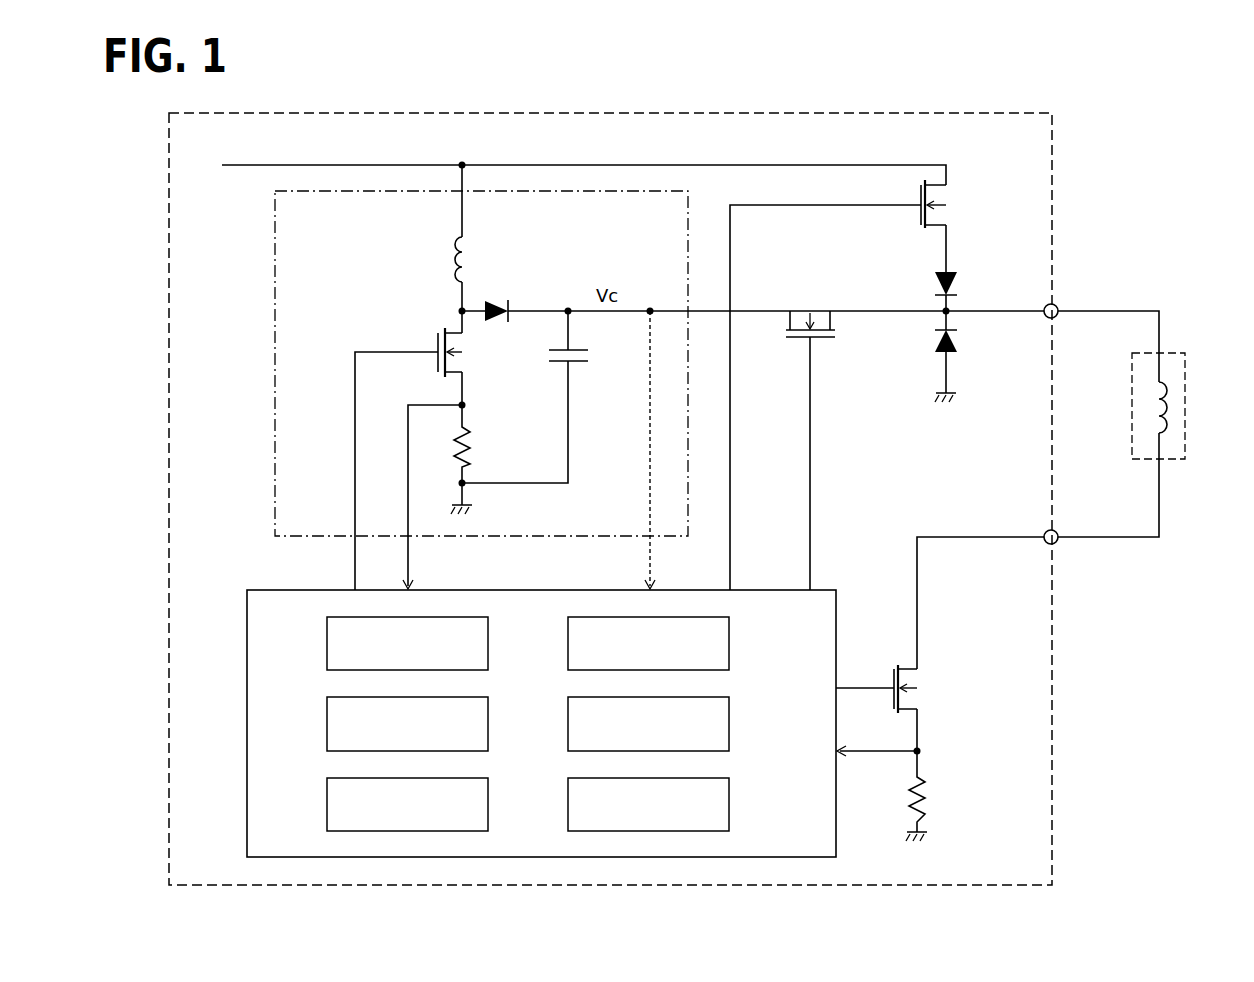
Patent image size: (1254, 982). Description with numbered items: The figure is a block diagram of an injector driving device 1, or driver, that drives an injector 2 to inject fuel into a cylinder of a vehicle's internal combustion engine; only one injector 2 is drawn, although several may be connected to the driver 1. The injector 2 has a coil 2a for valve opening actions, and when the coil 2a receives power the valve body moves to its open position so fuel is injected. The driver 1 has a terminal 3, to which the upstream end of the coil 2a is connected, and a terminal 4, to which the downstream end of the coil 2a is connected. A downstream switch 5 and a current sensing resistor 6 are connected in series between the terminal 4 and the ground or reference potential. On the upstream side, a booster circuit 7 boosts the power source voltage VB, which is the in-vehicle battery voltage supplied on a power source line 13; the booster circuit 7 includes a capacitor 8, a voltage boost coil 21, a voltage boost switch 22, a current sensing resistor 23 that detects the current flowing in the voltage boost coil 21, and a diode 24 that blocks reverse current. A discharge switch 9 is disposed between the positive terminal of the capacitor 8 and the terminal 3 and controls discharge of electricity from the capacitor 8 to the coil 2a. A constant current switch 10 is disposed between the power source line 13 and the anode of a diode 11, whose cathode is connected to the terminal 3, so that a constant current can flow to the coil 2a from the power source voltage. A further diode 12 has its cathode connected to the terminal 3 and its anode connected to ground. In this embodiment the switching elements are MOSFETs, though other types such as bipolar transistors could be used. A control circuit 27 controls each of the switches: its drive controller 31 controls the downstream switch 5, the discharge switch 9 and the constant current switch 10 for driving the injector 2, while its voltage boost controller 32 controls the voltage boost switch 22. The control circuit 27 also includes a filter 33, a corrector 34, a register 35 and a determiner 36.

The injector driving device 1 is at (1052, 755).
The injector 2 is at (1184, 381).
The coil 2a is at (1177, 407).
The terminal 3 is at (1058, 306).
The terminal 4 is at (1058, 532).
The downstream switch 5 is at (920, 690).
The current sensing resistor 6 is at (930, 805).
The booster circuit 7 is at (272, 272).
The capacitor 8 is at (584, 364).
The discharge switch 9 is at (808, 304).
The constant current switch 10 is at (952, 197).
The diode 11 is at (960, 283).
The diode 12 is at (960, 343).
The power source line 13 is at (690, 165).
The voltage boost coil 21 is at (458, 246).
The voltage boost switch 22 is at (438, 330).
The current sensing resistor 23 is at (478, 448).
The diode 24 is at (490, 300).
The control circuit 27 is at (272, 590).
The drive controller 31 is at (491, 805).
The voltage boost controller 32 is at (491, 643).
The filter 33 is at (732, 643).
The corrector 34 is at (732, 723).
The register 35 is at (491, 723).
The determiner 36 is at (732, 805).